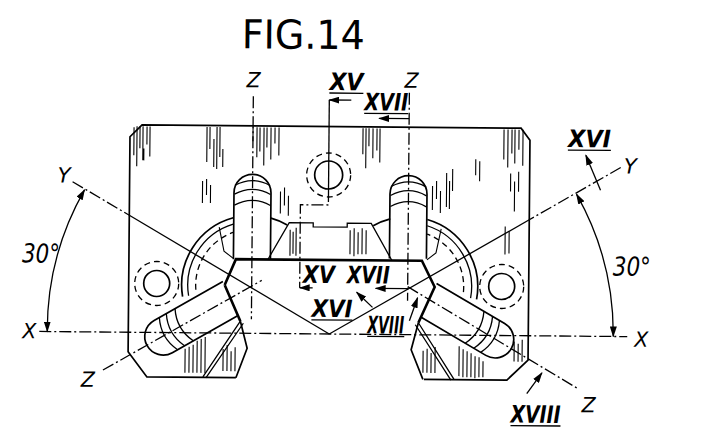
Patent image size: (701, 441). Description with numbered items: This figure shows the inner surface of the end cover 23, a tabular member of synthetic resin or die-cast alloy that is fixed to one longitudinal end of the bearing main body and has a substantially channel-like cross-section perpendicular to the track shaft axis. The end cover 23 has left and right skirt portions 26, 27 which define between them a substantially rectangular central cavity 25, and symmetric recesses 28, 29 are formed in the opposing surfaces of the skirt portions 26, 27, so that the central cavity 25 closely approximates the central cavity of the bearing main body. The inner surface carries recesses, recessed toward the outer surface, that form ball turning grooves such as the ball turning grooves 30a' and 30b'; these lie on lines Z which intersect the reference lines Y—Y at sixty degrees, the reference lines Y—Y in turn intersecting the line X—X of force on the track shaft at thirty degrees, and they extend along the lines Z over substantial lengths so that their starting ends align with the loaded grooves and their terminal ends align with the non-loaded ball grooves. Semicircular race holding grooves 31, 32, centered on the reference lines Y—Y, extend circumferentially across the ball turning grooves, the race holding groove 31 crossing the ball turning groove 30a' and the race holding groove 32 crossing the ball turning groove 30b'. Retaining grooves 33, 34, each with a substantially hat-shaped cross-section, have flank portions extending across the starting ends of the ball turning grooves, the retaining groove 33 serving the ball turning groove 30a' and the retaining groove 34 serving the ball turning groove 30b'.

The end cover 23 is at (532, 126).
The central cavity 25 is at (288, 291).
The skirt portion 26 is at (527, 262).
The skirt portion 27 is at (135, 262).
The recess 28 is at (413, 331).
The recess 29 is at (236, 293).
The ball turning groove 30a' is at (434, 199).
The ball turning groove 30b' is at (228, 203).
The race holding groove 31 is at (458, 246).
The race holding groove 32 is at (200, 247).
The retaining groove 33 is at (423, 354).
The retaining groove 34 is at (230, 358).